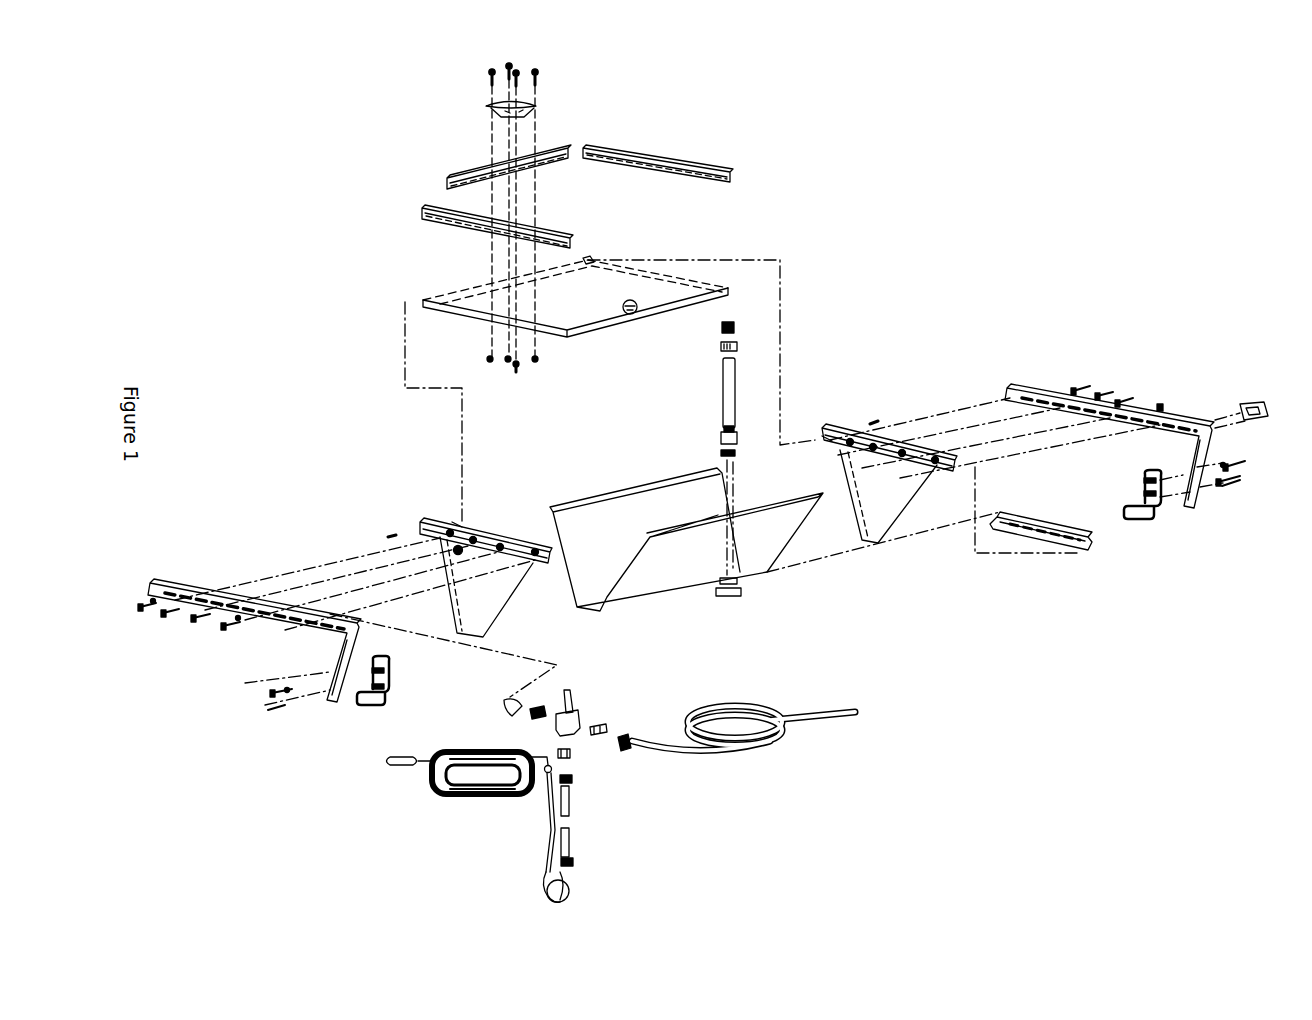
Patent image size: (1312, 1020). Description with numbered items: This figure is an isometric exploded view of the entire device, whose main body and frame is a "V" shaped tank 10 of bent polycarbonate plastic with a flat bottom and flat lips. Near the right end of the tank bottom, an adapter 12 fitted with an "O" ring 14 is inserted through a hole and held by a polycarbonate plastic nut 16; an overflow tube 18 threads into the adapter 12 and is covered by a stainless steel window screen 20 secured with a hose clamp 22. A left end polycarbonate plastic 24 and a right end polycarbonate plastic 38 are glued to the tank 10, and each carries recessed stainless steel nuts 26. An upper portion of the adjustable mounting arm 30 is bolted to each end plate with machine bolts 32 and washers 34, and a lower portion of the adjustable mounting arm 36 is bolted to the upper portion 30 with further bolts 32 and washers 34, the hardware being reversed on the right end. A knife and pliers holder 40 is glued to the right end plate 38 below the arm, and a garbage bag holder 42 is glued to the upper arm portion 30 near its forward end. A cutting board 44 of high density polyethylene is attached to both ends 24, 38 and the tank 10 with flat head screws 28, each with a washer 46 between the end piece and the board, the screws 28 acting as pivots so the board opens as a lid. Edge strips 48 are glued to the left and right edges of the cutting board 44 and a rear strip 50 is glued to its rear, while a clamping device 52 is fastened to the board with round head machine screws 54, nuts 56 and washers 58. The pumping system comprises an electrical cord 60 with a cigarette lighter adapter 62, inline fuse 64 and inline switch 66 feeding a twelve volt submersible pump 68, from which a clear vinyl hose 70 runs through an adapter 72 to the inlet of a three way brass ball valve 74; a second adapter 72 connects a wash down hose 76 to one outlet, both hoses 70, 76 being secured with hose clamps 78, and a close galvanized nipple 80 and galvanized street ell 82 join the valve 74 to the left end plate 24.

The "V" shaped tank 10 is at (690, 567).
The adapter 1" MIP x ¾" FIP 12 is at (739, 440).
The "O" ring 14 is at (736, 455).
The 1" polycarbonate plastic nut 16 is at (742, 593).
The overflow tube ¾" diameter 18 is at (737, 395).
The stainless steel window screen 20 is at (736, 327).
The 1" stainless steel hose clamp 22 is at (739, 347).
The left end polycarbonate plastic 24 is at (497, 585).
The ¼" stainless steel nut 26 is at (535, 552).
The ⅛"x1" stainless steel flat head screw 28 is at (388, 540).
The upper portion of left end adjustable mounting arm 30 is at (1200, 440).
The ¼"x¾" stainless steel machine bolt 32 is at (210, 617).
The ¼" stainless steel washer 34 is at (152, 600).
The lower portion of adjustable mounting arm 36 is at (1142, 508).
The right end polycarbonate plastic 38 is at (885, 520).
The polycarbonate plastic knife and pliers holder 40 is at (1082, 547).
The polycarbonate plastic garbage bag holder 42 is at (1264, 420).
The cutting board high density polyethylene plastic 44 is at (605, 300).
The ⅛" stainless steel washer 46 is at (458, 525).
The 1"x10½"x½" high density polyethylene plastic 48 is at (732, 178).
The 1"x16"x½" high density polyethylene plastic 50 is at (456, 176).
The clamping device 52 is at (537, 116).
The ⅛"x¾" round head stainless steel machine screws 54 is at (535, 71).
The ⅛" stainless steel nut 56 is at (533, 361).
The ⅛" stainless steel washer 58 is at (489, 354).
The 10' electrical cord 60 is at (445, 795).
The cigarette lighter adapter 62 is at (396, 770).
The inline fuse 64 is at (549, 790).
The inline switch 66 is at (545, 772).
The 12 volt submersible pump 68 is at (569, 893).
The ½" clear vinyl hose 70 is at (570, 841).
The ½" slip x ½" MIP polyethylene adapter 72 is at (597, 733).
The ½" 3 way brass ball valve 74 is at (571, 722).
The ½" clear vinyl plastic hose 76 is at (690, 741).
The ½" stainless steel hose clamps 78 is at (625, 749).
The ½" close galvanized nipple 80 is at (538, 707).
The ½" galvanized street ell 82 is at (503, 707).